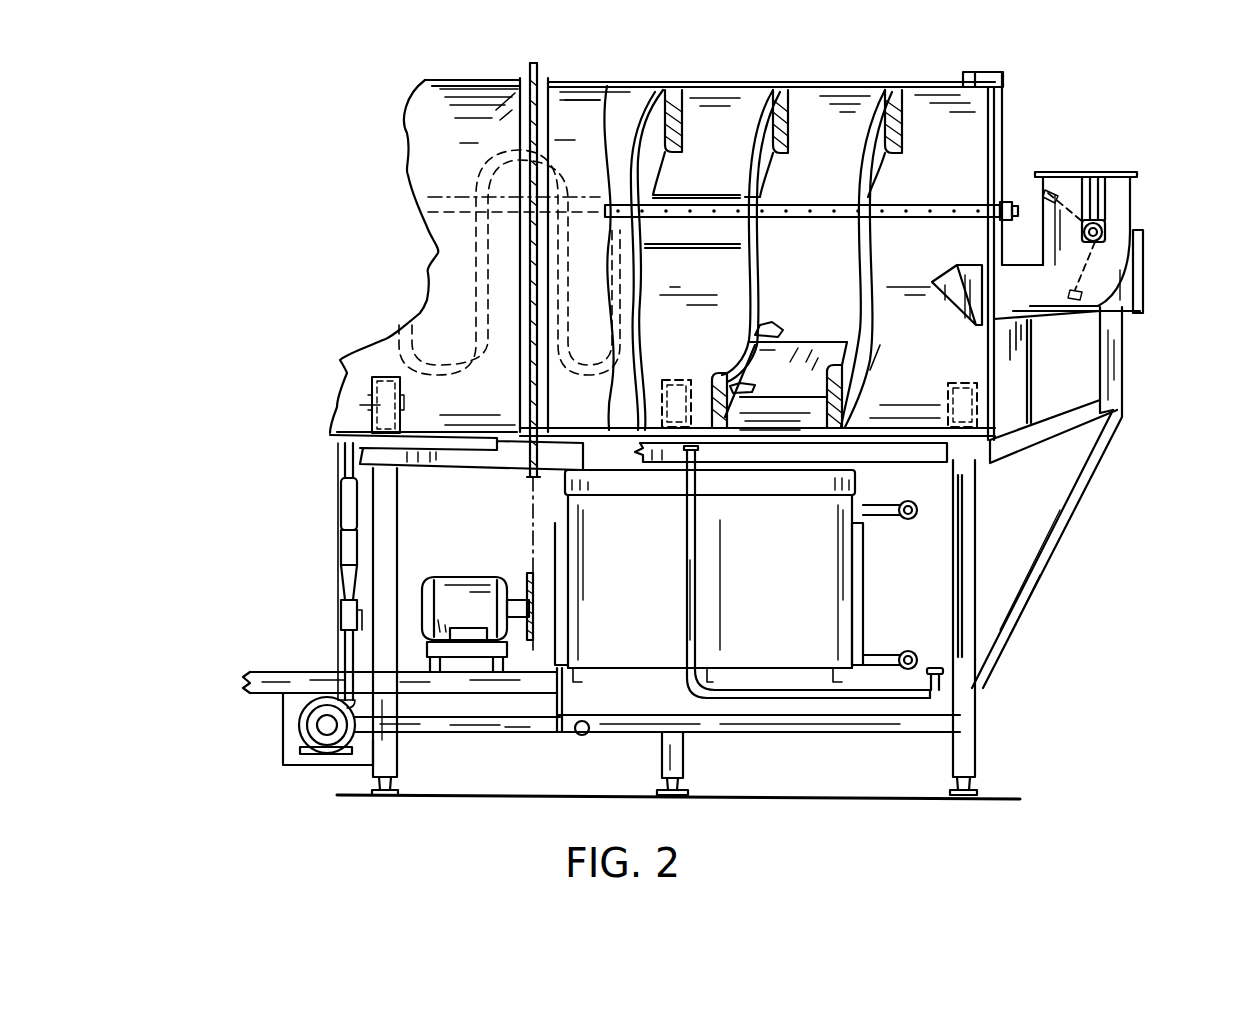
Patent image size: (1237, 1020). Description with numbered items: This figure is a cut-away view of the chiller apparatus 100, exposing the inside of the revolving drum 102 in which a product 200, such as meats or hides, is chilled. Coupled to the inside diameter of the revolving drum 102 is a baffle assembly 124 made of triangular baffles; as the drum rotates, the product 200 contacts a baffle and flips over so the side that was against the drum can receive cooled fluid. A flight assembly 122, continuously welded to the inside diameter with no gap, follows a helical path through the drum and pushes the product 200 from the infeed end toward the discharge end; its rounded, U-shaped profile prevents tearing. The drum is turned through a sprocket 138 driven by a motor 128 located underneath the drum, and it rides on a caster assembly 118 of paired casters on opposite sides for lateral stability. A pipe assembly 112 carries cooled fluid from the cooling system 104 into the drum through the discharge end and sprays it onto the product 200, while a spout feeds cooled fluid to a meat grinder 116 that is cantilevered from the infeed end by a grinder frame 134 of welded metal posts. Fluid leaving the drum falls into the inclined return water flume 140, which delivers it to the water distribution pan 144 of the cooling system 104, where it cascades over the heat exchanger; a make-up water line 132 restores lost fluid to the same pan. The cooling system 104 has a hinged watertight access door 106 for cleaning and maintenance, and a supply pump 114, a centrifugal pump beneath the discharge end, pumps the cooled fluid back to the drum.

The chiller apparatus 100 is at (328, 138).
The revolving drum 102 is at (833, 83).
The cooling system 104 is at (788, 583).
The watertight access door 106 is at (867, 592).
The pipe assembly 112 is at (703, 217).
The supply pump 114 is at (307, 737).
The meat grinder 116 is at (1123, 170).
The caster assembly 118 is at (677, 380).
The flight assembly 122 is at (757, 130).
The baffle assembly 124 is at (781, 362).
The motor 128 is at (458, 575).
The make-up water line 132 is at (975, 690).
The grinder frame 134 is at (1087, 417).
The sprocket 138 is at (530, 65).
The return water flume 140 is at (400, 446).
The water distribution pan 144 is at (853, 485).
The product 200 is at (775, 322).